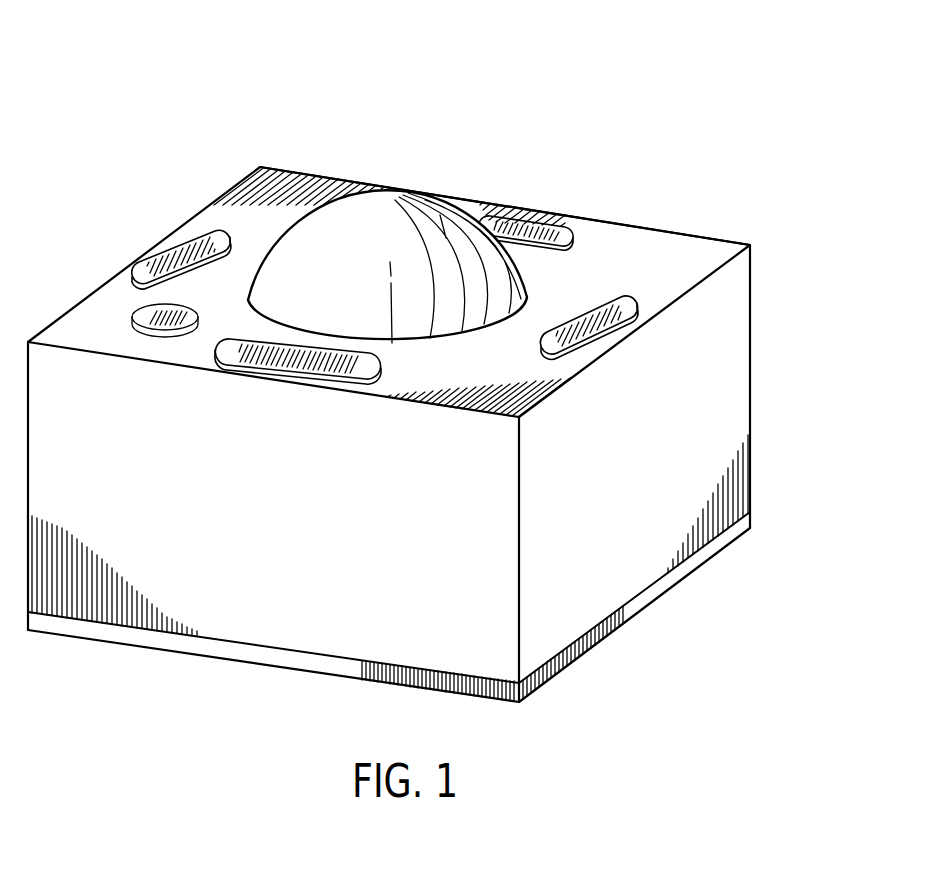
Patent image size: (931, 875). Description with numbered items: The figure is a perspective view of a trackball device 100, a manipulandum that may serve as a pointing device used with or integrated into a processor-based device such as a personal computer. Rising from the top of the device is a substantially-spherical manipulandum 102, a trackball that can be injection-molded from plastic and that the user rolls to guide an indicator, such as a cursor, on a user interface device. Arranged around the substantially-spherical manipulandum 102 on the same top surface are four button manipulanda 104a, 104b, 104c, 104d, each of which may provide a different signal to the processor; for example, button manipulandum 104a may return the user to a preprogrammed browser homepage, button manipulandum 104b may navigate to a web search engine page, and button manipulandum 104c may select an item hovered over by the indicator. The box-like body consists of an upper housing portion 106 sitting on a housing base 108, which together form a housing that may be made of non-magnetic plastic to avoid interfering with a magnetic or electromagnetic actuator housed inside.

The device 100 is at (429, 357).
The substantially-spherical manipulandum 102 is at (390, 215).
The button manipulandum 104a is at (185, 247).
The button manipulandum 104b is at (242, 348).
The button manipulandum 104c is at (607, 303).
The button manipulandum 104d is at (547, 230).
The upper housing portion 106 is at (705, 355).
The housing base 108 is at (655, 592).